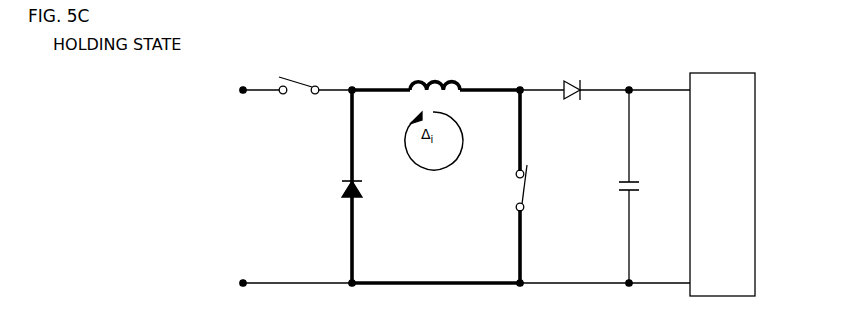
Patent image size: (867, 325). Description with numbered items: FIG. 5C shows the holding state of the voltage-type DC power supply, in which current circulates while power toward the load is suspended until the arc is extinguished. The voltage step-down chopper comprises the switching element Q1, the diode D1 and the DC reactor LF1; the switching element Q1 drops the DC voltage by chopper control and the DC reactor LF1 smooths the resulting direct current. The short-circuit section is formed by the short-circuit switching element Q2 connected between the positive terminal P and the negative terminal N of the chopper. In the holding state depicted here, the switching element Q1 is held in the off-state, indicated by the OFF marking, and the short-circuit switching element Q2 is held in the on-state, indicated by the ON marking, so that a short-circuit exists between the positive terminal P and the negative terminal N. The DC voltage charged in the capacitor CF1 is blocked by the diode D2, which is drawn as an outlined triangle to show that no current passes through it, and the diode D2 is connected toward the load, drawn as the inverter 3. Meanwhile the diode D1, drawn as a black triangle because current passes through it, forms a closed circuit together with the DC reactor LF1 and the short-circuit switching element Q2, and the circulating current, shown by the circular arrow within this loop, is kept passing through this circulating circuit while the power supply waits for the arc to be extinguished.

The inverter 3 is at (724, 73).
The switching element Q1 is at (292, 88).
The short-circuit switching element Q2 is at (499, 188).
The diode D1 is at (338, 189).
The diode D2 is at (571, 79).
The DC reactor LF1 is at (435, 68).
The capacitor CF1 is at (613, 189).
The positive terminal P is at (518, 78).
The negative terminal N is at (519, 297).